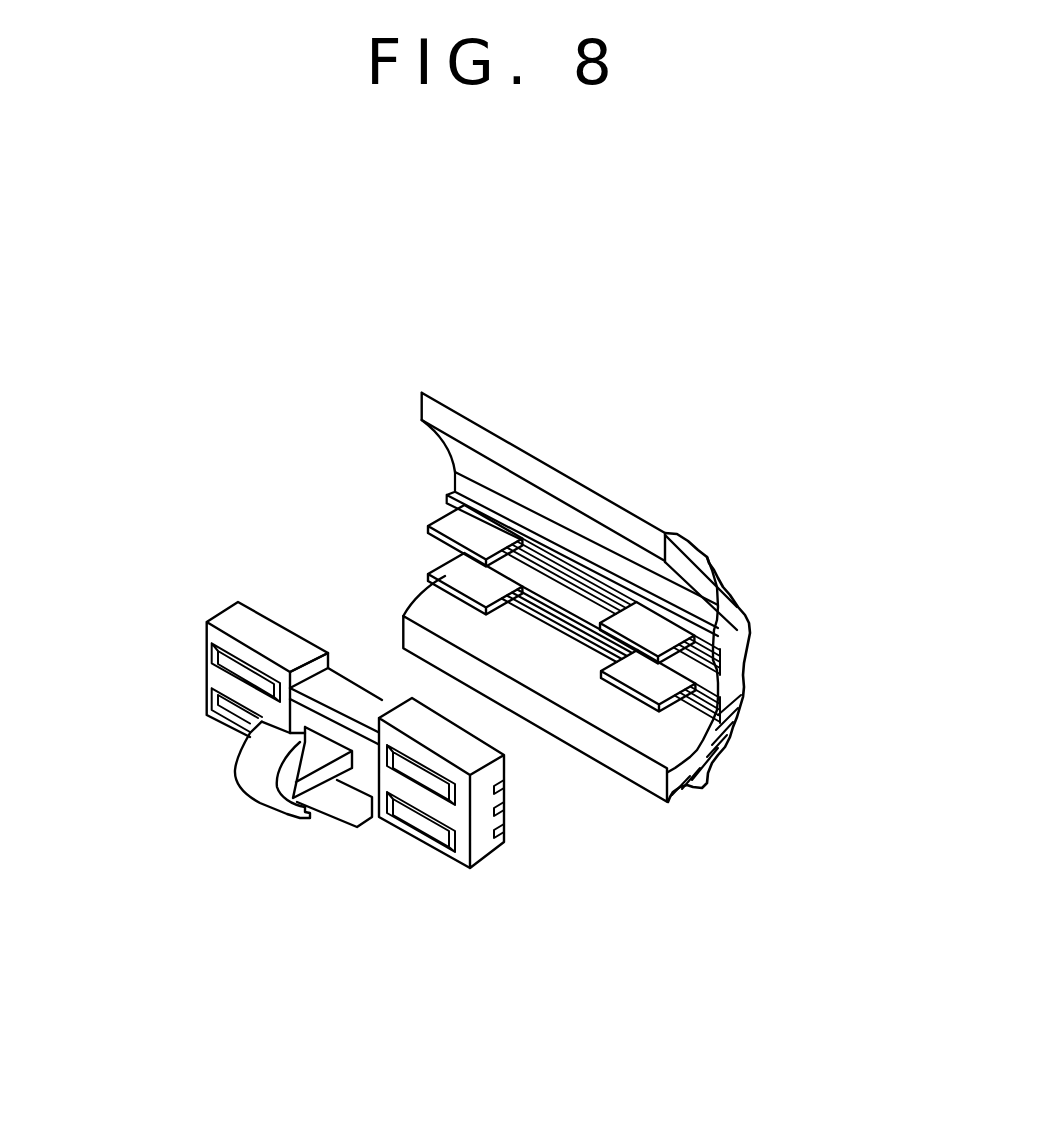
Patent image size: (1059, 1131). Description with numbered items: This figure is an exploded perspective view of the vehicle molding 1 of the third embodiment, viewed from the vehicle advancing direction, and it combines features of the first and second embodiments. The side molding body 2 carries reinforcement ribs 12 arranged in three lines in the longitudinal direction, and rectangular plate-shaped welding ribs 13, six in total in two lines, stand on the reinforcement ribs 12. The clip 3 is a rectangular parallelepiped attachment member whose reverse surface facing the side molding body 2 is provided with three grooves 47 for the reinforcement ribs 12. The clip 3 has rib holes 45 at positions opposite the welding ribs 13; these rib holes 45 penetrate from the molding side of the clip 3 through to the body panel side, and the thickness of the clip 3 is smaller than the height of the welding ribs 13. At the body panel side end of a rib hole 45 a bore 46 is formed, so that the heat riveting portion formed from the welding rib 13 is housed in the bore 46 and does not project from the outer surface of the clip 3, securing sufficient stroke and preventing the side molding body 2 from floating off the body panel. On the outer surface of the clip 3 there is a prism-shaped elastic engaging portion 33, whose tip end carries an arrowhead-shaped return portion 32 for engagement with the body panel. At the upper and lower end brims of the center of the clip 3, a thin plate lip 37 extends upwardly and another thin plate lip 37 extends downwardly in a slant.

The vehicle molding 1 is at (704, 378).
The side molding body 2 is at (415, 367).
The clip 3 is at (180, 595).
The reinforcement ribs 12 is at (728, 672).
The welding ribs 13 is at (657, 636).
The return portion 32 is at (260, 755).
The elastic engaging portion 33 is at (320, 790).
The thin plate lip 37 is at (353, 722).
The rib holes 45 is at (508, 851).
The bore 46 is at (407, 818).
The reinforcement rib grooves 47 is at (500, 828).